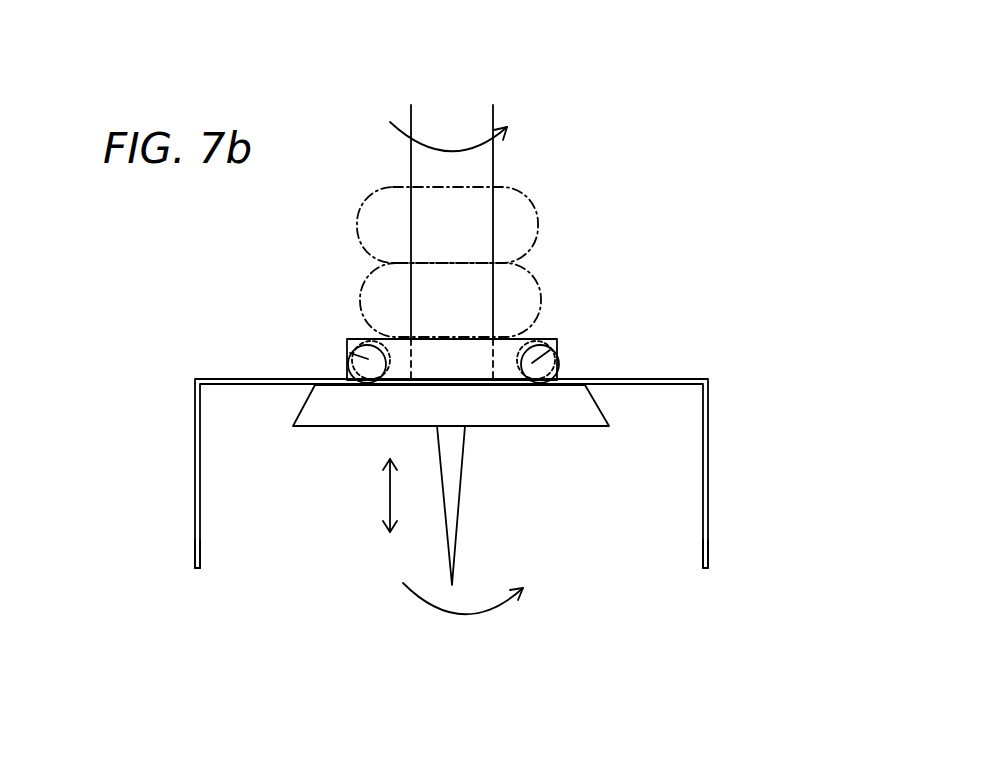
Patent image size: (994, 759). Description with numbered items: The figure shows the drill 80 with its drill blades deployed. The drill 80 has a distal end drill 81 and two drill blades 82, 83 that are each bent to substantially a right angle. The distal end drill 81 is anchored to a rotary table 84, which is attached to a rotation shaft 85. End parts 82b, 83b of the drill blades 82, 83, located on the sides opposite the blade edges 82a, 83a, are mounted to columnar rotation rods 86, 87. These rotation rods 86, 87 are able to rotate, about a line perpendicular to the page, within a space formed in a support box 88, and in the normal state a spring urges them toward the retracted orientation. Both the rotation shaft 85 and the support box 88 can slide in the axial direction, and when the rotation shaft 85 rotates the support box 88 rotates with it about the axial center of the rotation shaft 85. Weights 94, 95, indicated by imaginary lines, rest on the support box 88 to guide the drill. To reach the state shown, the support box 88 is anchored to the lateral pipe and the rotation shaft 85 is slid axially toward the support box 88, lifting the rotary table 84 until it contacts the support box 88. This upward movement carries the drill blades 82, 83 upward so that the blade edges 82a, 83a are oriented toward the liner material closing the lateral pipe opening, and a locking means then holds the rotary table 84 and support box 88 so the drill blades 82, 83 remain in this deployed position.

The drill 80 is at (343, 598).
The distal end drill 81 is at (460, 538).
The drill blade 82 is at (192, 410).
The blade edge 82a is at (197, 567).
The end part 82b is at (345, 377).
The drill blade 83 is at (710, 443).
The blade edge 83a is at (705, 573).
The end part 83b is at (548, 383).
The rotary table 84 is at (563, 428).
The rotation shaft 85 is at (495, 158).
The rotation rod 86 is at (350, 378).
The rotation rod 87 is at (556, 352).
The support box 88 is at (540, 342).
The weight 94 is at (540, 212).
The weight 95 is at (540, 280).